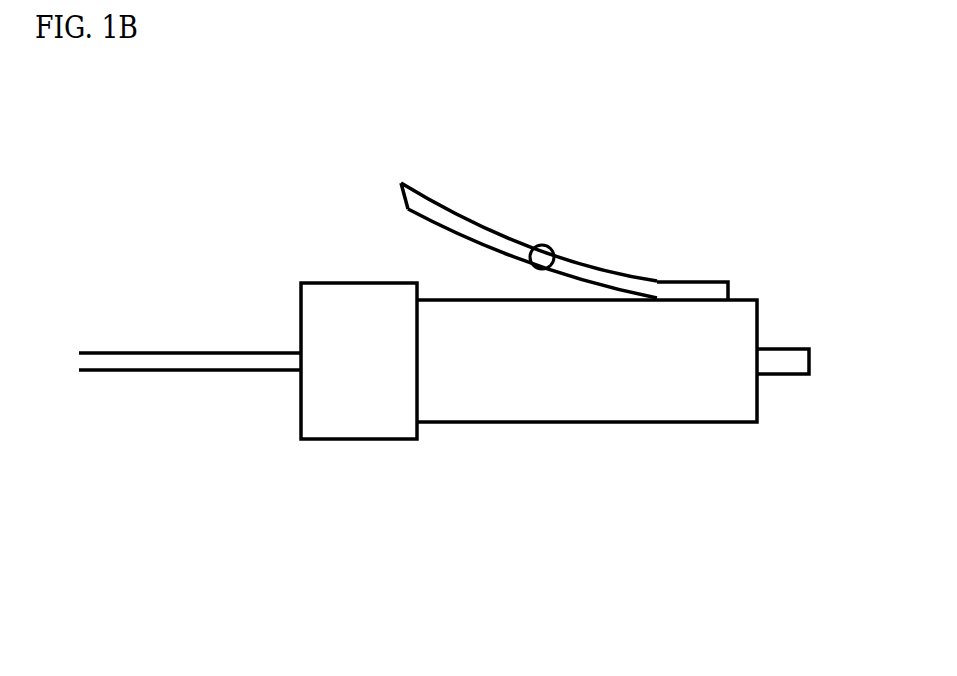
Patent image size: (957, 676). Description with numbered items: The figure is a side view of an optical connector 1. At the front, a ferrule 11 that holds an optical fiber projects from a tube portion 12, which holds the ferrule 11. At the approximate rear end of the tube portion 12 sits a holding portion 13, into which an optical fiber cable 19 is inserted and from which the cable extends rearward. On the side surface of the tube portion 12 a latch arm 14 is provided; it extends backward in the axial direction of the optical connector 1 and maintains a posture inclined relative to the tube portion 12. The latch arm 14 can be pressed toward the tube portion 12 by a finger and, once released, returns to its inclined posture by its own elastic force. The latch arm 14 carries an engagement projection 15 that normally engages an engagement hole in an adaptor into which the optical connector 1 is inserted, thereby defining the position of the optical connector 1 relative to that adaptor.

The optical connector 1 is at (729, 251).
The ferrule 11 is at (782, 360).
The tube portion 12 is at (597, 398).
The holding portion 13 is at (352, 398).
The latch arm 14 is at (609, 268).
The engagement projection 15 is at (543, 255).
The optical fiber cable 19 is at (107, 359).